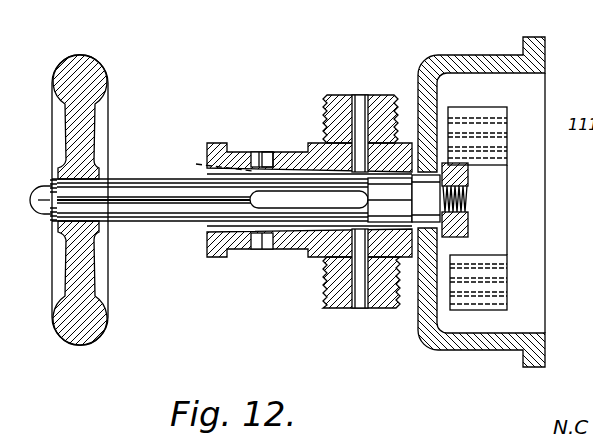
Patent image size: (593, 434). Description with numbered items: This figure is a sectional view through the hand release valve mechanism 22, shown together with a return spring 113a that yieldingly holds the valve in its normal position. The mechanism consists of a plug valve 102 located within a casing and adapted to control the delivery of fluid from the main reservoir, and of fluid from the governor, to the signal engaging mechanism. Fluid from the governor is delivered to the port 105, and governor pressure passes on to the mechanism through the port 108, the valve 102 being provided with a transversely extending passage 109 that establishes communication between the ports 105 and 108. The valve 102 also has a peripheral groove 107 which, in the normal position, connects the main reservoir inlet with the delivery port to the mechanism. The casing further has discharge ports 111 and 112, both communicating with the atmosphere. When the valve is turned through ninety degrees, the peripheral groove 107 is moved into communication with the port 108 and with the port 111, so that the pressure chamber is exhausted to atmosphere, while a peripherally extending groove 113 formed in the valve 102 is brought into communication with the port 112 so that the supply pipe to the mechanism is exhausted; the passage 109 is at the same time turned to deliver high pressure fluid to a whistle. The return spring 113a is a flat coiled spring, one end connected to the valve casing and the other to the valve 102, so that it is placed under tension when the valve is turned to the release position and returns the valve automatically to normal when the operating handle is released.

The hand release valve mechanism 22 is at (258, 130).
The plug valve 102 is at (205, 240).
The port 105 is at (363, 298).
The peripheral groove 107 is at (309, 201).
The port 108 is at (358, 102).
The transversely extending passage 109 is at (372, 184).
The discharge port 111 is at (262, 252).
The discharge port 112 is at (258, 150).
The peripherally extending groove 113 is at (196, 164).
The return spring 113a is at (460, 108).